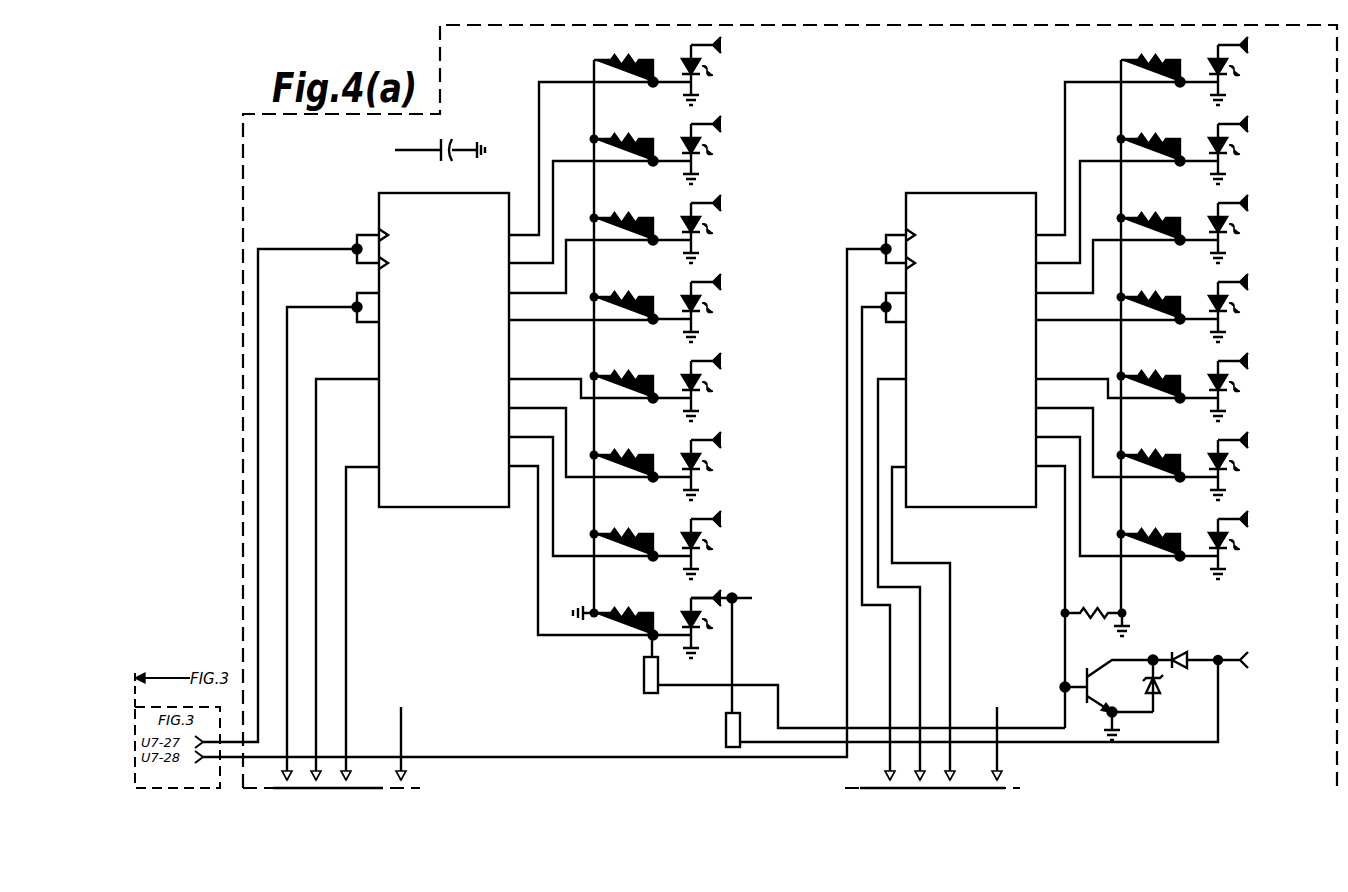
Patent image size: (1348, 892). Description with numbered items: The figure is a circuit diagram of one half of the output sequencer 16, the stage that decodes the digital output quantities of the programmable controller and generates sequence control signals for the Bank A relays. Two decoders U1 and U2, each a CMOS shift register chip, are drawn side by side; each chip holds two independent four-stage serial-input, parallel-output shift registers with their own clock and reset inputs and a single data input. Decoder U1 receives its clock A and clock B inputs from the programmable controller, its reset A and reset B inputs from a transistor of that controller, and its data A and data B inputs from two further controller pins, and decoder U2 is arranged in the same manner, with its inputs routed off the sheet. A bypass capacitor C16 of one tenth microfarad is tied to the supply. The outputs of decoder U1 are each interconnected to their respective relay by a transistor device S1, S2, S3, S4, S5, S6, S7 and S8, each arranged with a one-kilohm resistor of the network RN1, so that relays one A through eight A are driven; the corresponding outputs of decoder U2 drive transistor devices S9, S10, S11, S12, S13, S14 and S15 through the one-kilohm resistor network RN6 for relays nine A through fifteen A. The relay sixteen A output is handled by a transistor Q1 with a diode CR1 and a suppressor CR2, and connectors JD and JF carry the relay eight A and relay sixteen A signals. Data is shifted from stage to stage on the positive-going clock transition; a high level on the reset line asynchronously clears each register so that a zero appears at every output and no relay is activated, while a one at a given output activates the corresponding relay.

The output sequencer 16 is at (839, 107).
The decoder U1 is at (544, 431).
The decoder U2 is at (1021, 431).
The 1K resistor RN1 is at (619, 329).
The 1K resistor RN6 is at (1127, 337).
The capacitor C16 is at (431, 140).
The transistor Q1 is at (1109, 698).
The diode CR1 is at (1178, 648).
The transient suppressor CR2 is at (1162, 693).
The connector JD is at (834, 681).
The connector JF is at (952, 671).
The transistor device S1 is at (703, 71).
The transistor device S2 is at (703, 150).
The transistor device S3 is at (703, 229).
The transistor device S4 is at (703, 308).
The transistor device S5 is at (703, 387).
The transistor device S6 is at (703, 466).
The transistor device S7 is at (703, 545).
The transistor device S8 is at (713, 624).
The transistor device S9 is at (1225, 71).
The transistor device S10 is at (1225, 150).
The transistor device S11 is at (1225, 229).
The transistor device S12 is at (1225, 308).
The transistor device S13 is at (1225, 387).
The transistor device S14 is at (1225, 466).
The transistor device S15 is at (1225, 545).